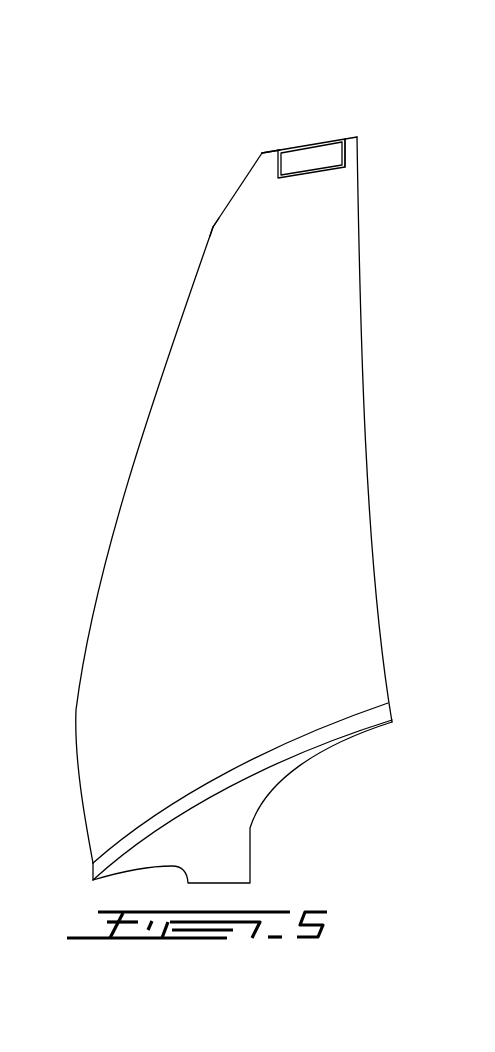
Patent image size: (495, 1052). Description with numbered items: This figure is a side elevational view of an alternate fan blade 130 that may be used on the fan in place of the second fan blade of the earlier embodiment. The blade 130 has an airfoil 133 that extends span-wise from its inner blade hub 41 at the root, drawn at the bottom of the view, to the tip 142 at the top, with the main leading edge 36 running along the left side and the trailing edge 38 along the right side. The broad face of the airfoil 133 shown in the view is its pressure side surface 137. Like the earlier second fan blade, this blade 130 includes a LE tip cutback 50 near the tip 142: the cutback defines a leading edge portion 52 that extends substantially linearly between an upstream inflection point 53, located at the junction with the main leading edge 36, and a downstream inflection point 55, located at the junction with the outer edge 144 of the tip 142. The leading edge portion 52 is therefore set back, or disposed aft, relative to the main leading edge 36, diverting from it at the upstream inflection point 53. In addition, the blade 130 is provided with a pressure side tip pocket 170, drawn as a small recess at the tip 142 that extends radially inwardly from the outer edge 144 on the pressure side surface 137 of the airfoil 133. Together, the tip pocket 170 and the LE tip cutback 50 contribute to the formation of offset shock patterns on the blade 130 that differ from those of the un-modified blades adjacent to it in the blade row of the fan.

The fan blade 130 is at (163, 228).
The main leading edge 36 is at (137, 452).
The trailing edge 38 is at (371, 586).
The inner blade hub 41 is at (235, 820).
The LE tip cutback 50 is at (243, 168).
The leading edge portion 52 is at (232, 192).
The upstream inflection point 53 is at (212, 227).
The downstream inflection point 55 is at (259, 151).
The airfoil 133 is at (198, 363).
The pressure side surface 137 is at (278, 533).
The tip 142 is at (340, 132).
The outer edge 144 is at (313, 140).
The pressure side tip pocket 170 is at (357, 148).